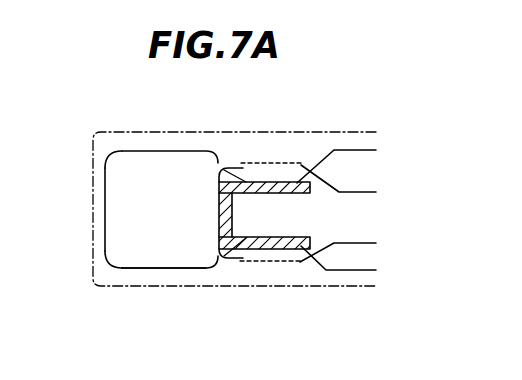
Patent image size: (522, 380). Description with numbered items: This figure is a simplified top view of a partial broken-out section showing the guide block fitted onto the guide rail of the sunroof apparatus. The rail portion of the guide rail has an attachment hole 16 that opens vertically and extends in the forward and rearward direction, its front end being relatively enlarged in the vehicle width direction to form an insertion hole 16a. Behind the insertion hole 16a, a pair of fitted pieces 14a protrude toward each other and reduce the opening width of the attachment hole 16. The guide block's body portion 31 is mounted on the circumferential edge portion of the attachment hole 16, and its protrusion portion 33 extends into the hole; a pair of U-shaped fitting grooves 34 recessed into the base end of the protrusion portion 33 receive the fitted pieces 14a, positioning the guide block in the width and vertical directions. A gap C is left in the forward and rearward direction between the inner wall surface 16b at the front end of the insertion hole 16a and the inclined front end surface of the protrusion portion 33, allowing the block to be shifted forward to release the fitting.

The gap C is at (153, 175).
The fitted pieces 14a is at (268, 194).
The attachment hole 16 is at (358, 270).
The insertion hole 16a is at (172, 270).
The inner wall surface 16b is at (103, 204).
The body portion 31 is at (288, 288).
The protrusion portion 33 is at (219, 213).
The fitting grooves 34 is at (260, 182).